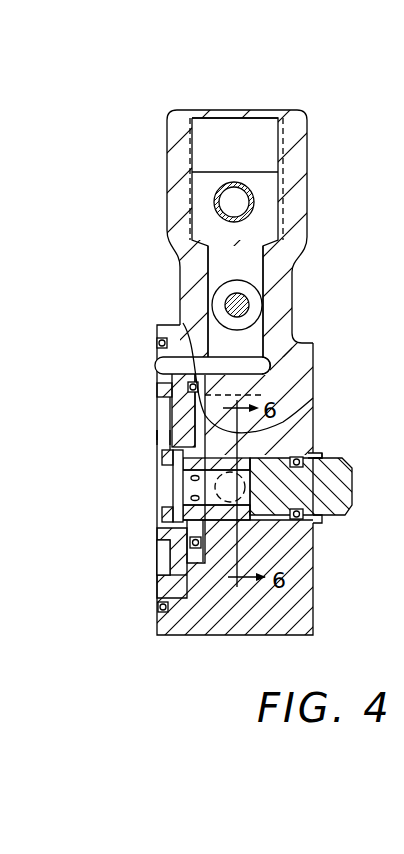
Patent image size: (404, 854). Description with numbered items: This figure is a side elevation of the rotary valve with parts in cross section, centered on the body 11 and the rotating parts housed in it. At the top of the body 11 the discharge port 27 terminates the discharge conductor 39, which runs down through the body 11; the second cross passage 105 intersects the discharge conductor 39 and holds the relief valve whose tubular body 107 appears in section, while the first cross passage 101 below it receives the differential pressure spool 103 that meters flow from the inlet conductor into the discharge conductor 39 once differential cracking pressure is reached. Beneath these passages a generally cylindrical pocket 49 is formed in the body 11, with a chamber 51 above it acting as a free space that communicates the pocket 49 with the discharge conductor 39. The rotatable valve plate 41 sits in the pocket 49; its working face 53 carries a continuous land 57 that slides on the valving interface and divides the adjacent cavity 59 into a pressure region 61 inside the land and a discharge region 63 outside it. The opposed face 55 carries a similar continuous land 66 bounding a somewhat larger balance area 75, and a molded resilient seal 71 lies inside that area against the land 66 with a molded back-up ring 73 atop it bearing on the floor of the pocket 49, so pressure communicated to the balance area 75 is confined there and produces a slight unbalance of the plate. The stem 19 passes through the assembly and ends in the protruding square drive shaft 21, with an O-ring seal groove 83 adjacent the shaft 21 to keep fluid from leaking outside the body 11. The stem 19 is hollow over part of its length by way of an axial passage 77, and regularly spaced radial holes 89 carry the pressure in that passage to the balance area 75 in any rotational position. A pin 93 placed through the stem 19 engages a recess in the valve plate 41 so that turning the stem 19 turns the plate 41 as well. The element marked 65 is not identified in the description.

The body 11 is at (307, 213).
The discharge port 27 is at (208, 112).
The tubular body 107 is at (213, 193).
The second cross passage 105 is at (228, 202).
The first cross passage 101 is at (223, 290).
The differential pressure spool 103 is at (227, 305).
The discharge conductor 39 is at (253, 333).
The working face 53 is at (165, 372).
The cavity 59 is at (143, 430).
The pressure region 61 is at (158, 435).
The continuous land 57 is at (155, 390).
The molded resilient seal 71 is at (172, 398).
The valve plate 41 is at (172, 407).
The molded back-up ring 73 is at (203, 388).
The chamber 51 is at (255, 370).
The continuous land 66 is at (183, 323).
The balance area 75 is at (263, 457).
The stem 19 is at (278, 455).
The O-ring seal groove 83 is at (310, 456).
The shaft 21 is at (338, 467).
The pocket 49 is at (205, 523).
The pin 93 is at (182, 475).
The radial holes 89 is at (196, 486).
The axial passage 77 is at (166, 500).
The opposed face 55 is at (162, 542).
The spacer 65 is at (163, 583).
The discharge region 63 is at (162, 598).